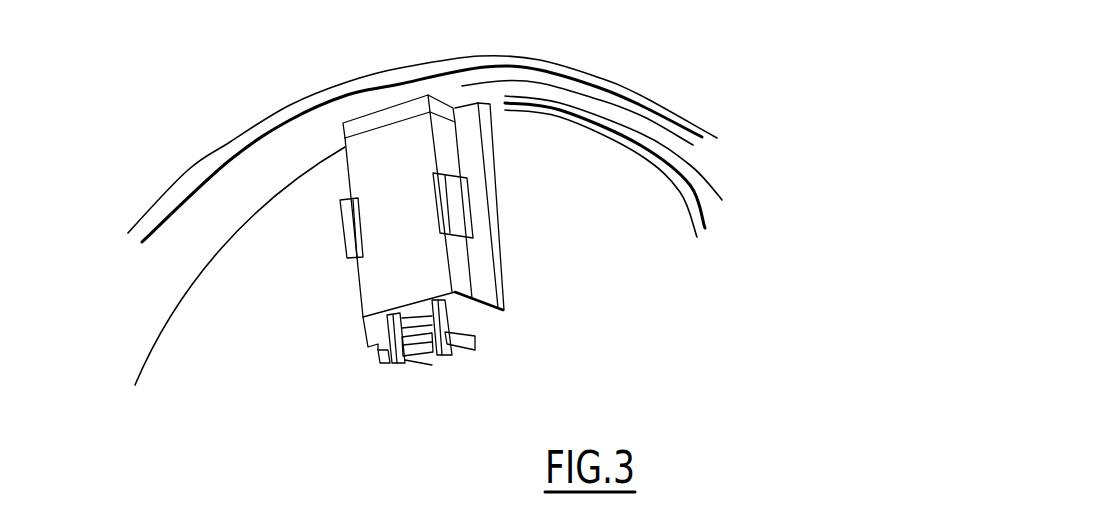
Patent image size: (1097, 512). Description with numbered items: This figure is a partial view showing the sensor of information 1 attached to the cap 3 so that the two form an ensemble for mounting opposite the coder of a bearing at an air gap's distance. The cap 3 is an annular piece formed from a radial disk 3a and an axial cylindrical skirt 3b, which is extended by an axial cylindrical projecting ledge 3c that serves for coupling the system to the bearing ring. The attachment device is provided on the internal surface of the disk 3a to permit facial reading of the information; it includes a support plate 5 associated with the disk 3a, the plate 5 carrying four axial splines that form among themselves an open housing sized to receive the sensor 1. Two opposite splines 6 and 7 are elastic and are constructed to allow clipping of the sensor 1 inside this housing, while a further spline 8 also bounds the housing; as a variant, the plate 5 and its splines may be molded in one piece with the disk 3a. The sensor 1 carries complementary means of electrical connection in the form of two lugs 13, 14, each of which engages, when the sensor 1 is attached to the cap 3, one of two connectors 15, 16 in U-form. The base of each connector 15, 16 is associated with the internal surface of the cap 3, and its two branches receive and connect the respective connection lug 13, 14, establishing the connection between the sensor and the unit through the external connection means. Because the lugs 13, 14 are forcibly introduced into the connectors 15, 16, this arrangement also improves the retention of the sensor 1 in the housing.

The sensor of information 1 is at (403, 168).
The cap 3 is at (686, 123).
The radial disk 3a is at (232, 318).
The axial cylindrical skirt 3b is at (620, 88).
The axial cylindrical projecting ledge 3c is at (690, 204).
The support plate 5 is at (487, 283).
The axial spline 6 is at (340, 233).
The axial spline 7 is at (462, 208).
The axial spline 8 is at (383, 117).
The connection lug 13 is at (406, 366).
The connection lug 14 is at (452, 363).
The connector 15 is at (432, 364).
The connector 16 is at (476, 338).